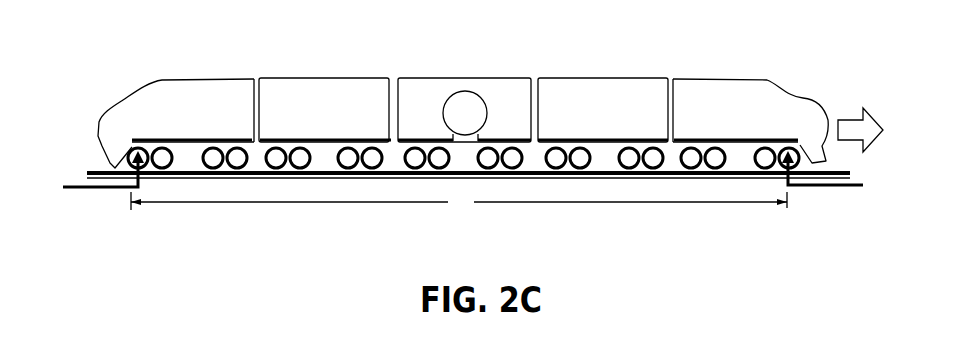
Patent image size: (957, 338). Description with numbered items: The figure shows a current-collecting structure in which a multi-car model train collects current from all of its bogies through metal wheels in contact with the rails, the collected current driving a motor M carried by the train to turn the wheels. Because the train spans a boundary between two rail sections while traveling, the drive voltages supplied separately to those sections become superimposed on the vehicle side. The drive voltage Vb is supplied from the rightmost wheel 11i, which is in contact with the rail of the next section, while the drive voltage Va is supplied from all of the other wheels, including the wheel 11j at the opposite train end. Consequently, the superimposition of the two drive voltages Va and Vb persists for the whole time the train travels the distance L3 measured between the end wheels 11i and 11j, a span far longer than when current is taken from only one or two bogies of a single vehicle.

The wheel at train end 11j is at (123, 172).
The rightmost wheel 11i is at (803, 173).
The motor M is at (465, 116).
The distance between wheels at train ends L3 is at (459, 203).
The drive voltage Va is at (98, 168).
The drive voltage Vb is at (838, 168).